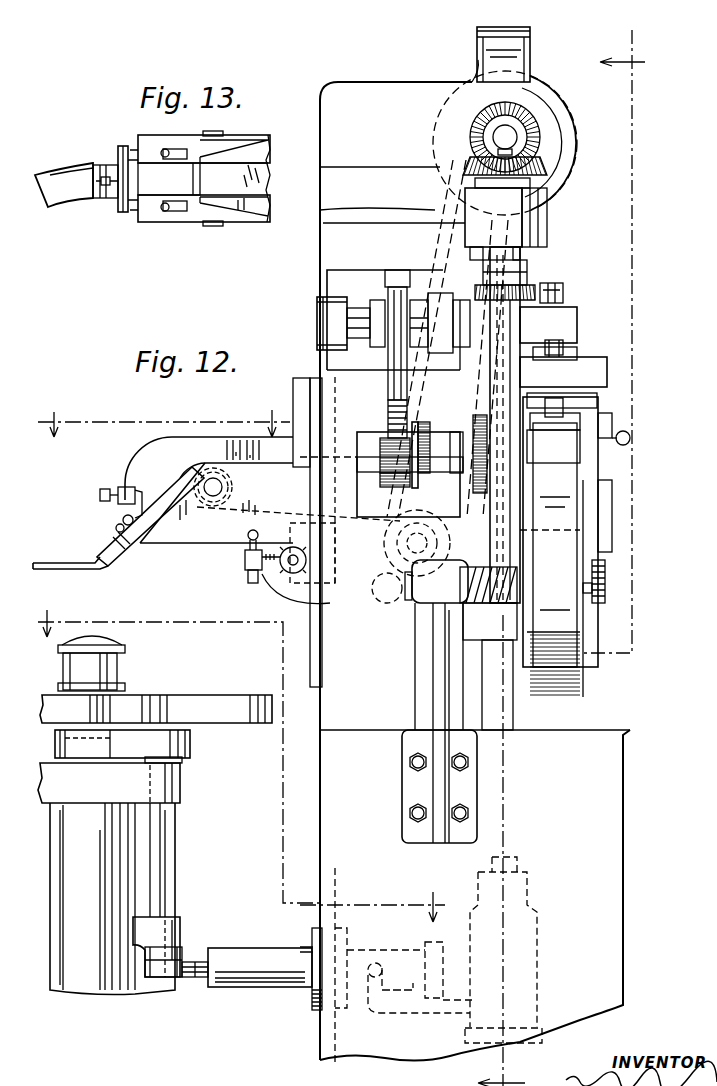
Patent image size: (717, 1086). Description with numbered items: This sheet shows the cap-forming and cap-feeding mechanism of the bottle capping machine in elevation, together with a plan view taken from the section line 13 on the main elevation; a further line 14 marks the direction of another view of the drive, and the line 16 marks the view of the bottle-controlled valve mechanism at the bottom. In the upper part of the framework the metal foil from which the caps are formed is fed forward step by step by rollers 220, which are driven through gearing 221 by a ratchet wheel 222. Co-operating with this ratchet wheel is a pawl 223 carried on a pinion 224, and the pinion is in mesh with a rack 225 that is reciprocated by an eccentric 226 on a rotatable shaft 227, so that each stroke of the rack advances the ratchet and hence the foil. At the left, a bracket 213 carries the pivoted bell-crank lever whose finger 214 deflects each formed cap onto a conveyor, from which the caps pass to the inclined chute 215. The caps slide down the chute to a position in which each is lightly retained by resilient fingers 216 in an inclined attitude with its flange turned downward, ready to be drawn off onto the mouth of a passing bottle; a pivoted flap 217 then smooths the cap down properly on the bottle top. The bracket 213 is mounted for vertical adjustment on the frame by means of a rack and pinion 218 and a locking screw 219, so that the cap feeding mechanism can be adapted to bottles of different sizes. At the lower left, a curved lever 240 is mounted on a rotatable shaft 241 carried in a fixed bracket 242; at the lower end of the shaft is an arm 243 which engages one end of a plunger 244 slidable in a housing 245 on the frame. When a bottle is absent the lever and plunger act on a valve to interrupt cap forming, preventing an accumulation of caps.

In FIG. 12, the section line 13— 13 is at (164, 417).
In FIG. 12, the section line 14 is at (613, 341).
In FIG. 12, the section line 16 is at (241, 760).
In FIG. 12, the bracket 213 is at (198, 537).
In FIG. 12, the finger 214 is at (276, 462).
In FIG. 12, the inclined chute 215 is at (152, 487).
In FIG. 13, the resilient fingers 216 is at (100, 160).
In FIG. 12, the resilient fingers 216 is at (103, 568).
In FIG. 13, the pivoted flap 217 is at (68, 187).
In FIG. 12, the pivoted flap 217 is at (57, 563).
In FIG. 12, the rack and pinion 218 is at (308, 562).
In FIG. 12, the locking screw 219 is at (245, 563).
In FIG. 12, the rollers 220 is at (565, 448).
In FIG. 12, the gearing 221 is at (488, 552).
In FIG. 12, the ratchet wheel 222 is at (420, 437).
In FIG. 12, the pawl 223 is at (424, 425).
In FIG. 12, the pinion 224 is at (402, 477).
In FIG. 12, the rack 225 is at (392, 430).
In FIG. 12, the eccentric 226 is at (393, 275).
In FIG. 12, the rotatable shaft 227 is at (360, 294).
In FIG. 12, the curved lever 240 is at (190, 743).
In FIG. 12, the rotatable shaft 241 is at (175, 848).
In FIG. 12, the fixed bracket 242 is at (183, 777).
In FIG. 12, the arm 243 is at (162, 979).
In FIG. 12, the plunger 244 is at (196, 981).
In FIG. 12, the housing 245 is at (275, 960).